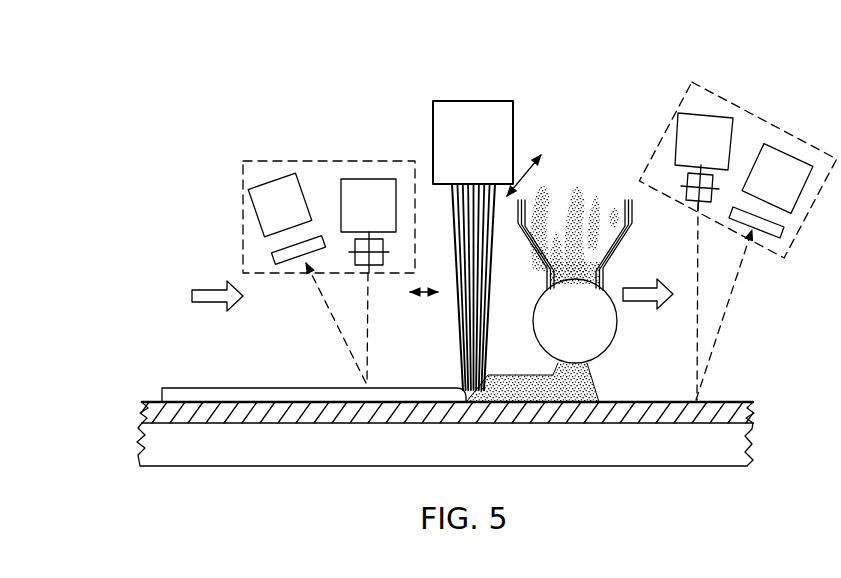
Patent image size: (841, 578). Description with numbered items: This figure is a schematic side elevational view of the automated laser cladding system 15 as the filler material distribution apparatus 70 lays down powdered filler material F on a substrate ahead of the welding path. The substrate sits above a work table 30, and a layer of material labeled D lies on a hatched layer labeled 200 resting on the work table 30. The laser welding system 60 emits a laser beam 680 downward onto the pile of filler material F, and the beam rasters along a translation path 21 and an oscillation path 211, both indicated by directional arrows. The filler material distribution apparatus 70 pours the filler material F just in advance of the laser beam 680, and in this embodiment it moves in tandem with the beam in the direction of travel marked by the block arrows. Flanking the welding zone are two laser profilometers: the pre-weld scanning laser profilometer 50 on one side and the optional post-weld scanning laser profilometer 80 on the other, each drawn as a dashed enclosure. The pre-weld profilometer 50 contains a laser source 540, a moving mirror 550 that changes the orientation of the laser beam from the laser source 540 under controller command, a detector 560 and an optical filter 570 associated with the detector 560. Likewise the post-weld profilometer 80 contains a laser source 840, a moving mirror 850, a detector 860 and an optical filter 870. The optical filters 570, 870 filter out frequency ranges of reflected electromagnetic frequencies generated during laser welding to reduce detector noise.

The automated laser cladding system 15 is at (209, 127).
The post-weld scanning laser profilometer 80 is at (298, 141).
The laser source 840 is at (380, 200).
The moving mirror 850 is at (378, 258).
The detector 860 is at (270, 207).
The optical filter 870 is at (274, 265).
The laser welding system 60 is at (495, 91).
The laser beam 680 is at (458, 227).
The rastering pattern translation path 21 is at (530, 172).
The oscillation path 211 is at (426, 304).
The filler material distribution apparatus 70 is at (627, 257).
The pre-weld scanning laser profilometer 50 is at (743, 66).
The laser source 540 is at (698, 128).
The moving mirror 550 is at (698, 200).
The detector 560 is at (773, 167).
The optical filter 570 is at (767, 225).
The deposited layer D is at (258, 381).
The powdered filler material F is at (601, 385).
The substrate layer 200 is at (763, 423).
The work table 30 is at (227, 448).